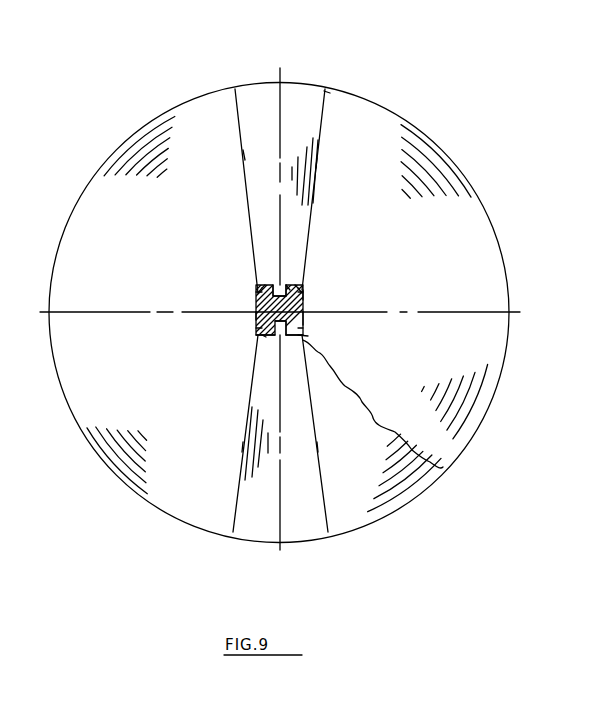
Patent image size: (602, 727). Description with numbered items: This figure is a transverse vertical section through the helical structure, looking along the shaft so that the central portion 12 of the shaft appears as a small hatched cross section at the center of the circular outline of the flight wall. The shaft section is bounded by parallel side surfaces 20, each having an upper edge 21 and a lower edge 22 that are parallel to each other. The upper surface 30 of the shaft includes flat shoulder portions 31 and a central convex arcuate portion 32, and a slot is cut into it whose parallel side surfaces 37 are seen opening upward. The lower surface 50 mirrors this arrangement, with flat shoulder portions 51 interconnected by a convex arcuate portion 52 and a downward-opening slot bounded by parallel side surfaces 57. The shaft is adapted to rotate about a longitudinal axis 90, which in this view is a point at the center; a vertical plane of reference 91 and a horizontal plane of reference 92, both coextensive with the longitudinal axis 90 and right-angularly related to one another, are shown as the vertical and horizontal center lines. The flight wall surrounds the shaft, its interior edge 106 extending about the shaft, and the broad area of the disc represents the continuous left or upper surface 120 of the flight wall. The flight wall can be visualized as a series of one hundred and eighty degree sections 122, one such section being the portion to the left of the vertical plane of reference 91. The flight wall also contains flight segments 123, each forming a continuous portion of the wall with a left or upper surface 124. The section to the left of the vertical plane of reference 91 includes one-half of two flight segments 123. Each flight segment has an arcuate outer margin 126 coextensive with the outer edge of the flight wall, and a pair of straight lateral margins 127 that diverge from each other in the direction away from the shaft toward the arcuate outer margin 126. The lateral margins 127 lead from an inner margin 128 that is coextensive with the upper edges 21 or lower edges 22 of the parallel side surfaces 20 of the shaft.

The central portion 12 is at (306, 296).
The parallel side surfaces 20 is at (258, 298).
The upper edge 21 is at (258, 293).
The lower edge 22 is at (262, 328).
The upper surface 30 is at (303, 289).
The flat shoulder portions 31 is at (260, 291).
The convex arcuate portion 32 is at (262, 288).
The parallel side surfaces of the upper slot 37 is at (283, 285).
The lower surface 50 is at (305, 338).
The flat shoulder portions 51 is at (266, 337).
The convex arcuate portion 52 is at (266, 340).
The parallel side surfaces of the lower slot 57 is at (284, 338).
The longitudinal axis 90 is at (260, 317).
The vertical plane of reference 91 is at (281, 83).
The horizontal plane of reference 92 is at (507, 323).
The interior edge 106 is at (305, 323).
The left or upper surface of the flight wall 120 is at (148, 267).
The one hundred and eighty degree sections 122 is at (353, 127).
The flight segments 123 is at (260, 100).
The left or upper surface of the flight segment 124 is at (314, 128).
The arcuate outer margin 126 is at (313, 84).
The lateral margins 127 is at (240, 155).
The inner margin 128 is at (292, 289).